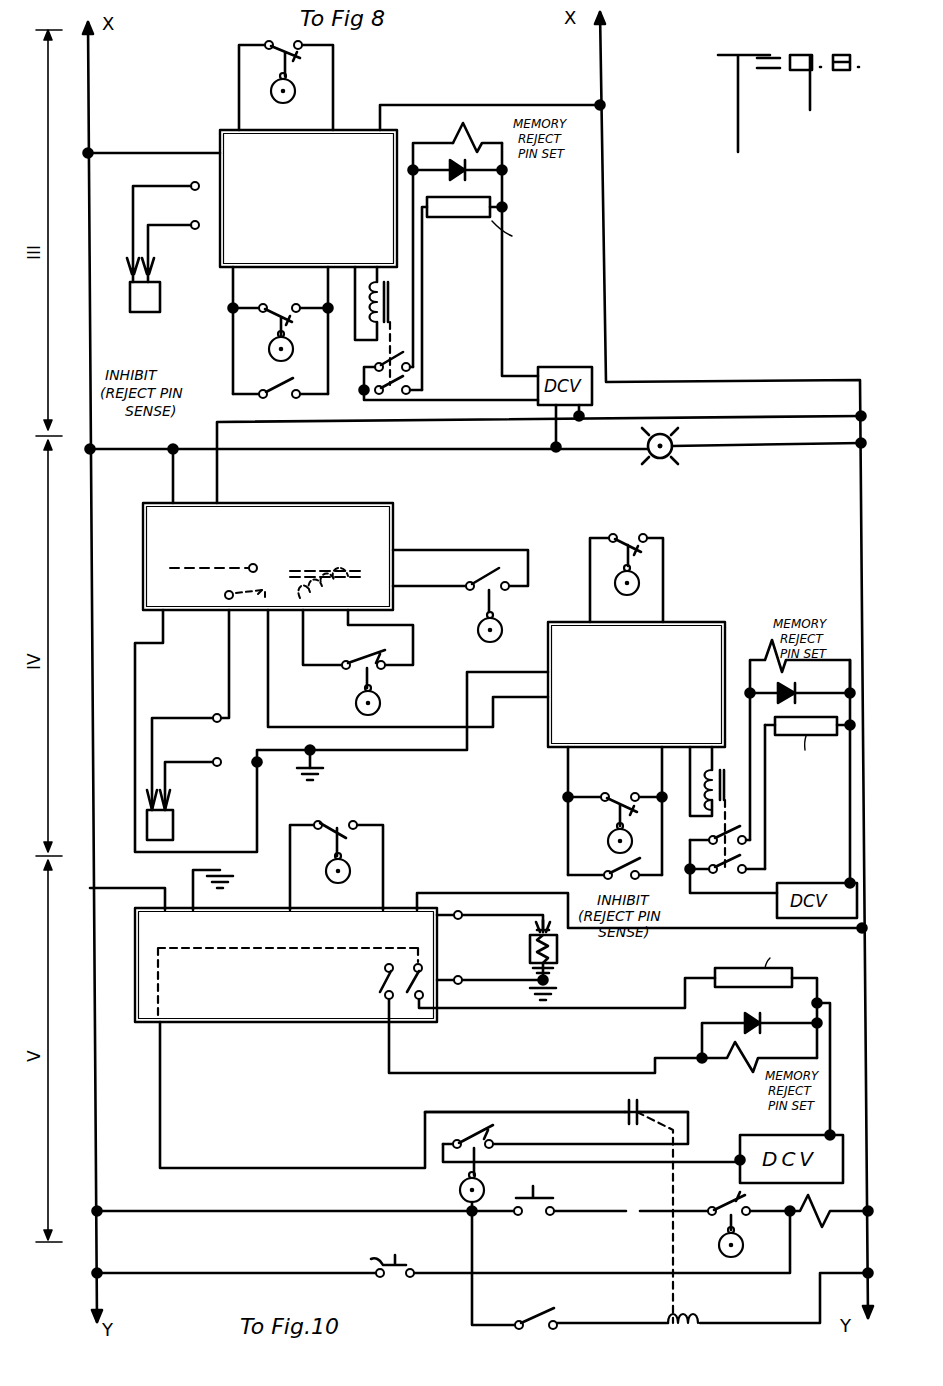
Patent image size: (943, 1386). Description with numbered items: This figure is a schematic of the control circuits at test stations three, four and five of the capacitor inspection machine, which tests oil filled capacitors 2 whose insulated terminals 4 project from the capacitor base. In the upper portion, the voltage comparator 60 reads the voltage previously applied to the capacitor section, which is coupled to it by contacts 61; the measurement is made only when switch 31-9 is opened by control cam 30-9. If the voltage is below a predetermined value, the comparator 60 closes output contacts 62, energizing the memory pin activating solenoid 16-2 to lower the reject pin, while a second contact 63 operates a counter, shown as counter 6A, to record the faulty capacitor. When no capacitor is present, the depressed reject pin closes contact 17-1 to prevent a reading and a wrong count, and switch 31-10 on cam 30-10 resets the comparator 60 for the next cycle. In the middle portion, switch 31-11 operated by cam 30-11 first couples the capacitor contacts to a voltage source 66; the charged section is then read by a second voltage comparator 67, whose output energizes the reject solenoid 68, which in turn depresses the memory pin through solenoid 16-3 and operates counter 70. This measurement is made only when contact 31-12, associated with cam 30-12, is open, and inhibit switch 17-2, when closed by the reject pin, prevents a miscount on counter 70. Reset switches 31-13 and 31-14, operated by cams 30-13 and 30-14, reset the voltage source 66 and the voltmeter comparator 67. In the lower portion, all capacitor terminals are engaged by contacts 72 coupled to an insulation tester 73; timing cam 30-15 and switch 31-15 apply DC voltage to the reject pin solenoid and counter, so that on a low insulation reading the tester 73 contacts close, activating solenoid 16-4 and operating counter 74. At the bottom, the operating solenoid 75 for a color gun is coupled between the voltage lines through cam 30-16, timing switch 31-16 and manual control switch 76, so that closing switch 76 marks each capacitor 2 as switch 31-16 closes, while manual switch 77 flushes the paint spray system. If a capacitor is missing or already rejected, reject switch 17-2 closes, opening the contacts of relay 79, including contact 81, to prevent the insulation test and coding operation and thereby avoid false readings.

The capacitor 2 is at (161, 297).
The terminals 4 is at (534, 930).
The counter 6A is at (447, 218).
The solenoid 16-2 is at (463, 123).
The solenoid 16-3 is at (772, 640).
The solenoid 16-4 is at (742, 1068).
The contact 17-1 is at (290, 383).
The inhibit switch 17-2 is at (531, 1318).
The control cam 30-9 is at (268, 347).
The cam 30-10 is at (270, 92).
The cam 30-11 is at (356, 701).
The cam 30-12 is at (607, 839).
The cam 30-13 is at (480, 636).
The cam 30-14 is at (643, 588).
The timing cam 30-15 is at (458, 1191).
The cam 30-16 is at (719, 1246).
The switch 31-9 is at (281, 330).
The switch 31-10 is at (262, 58).
The switch 31-11 is at (380, 658).
The contact 31-12 is at (622, 786).
The reset switch 31-13 is at (478, 566).
The reset switch 31-14 is at (625, 538).
The switch 31-15 is at (470, 1126).
The timing switch 31-16 is at (720, 1206).
The voltage comparator 60 is at (296, 250).
The contacts 61 is at (156, 263).
The output contacts 62 is at (396, 352).
The second contact 63 is at (409, 383).
The voltage source 66 is at (219, 553).
The second voltage comparator 67 is at (624, 727).
The reject solenoid 68 is at (722, 784).
The counter 70 is at (836, 722).
The contacts 72 is at (540, 916).
The insulation tester 73 is at (306, 1010).
The counter 74 is at (716, 971).
The operating solenoid 75 is at (830, 1222).
The manual control switch 76 is at (543, 1203).
The manual switch 77 is at (383, 1259).
The relay 79 is at (690, 1321).
The contact 81 is at (626, 1106).